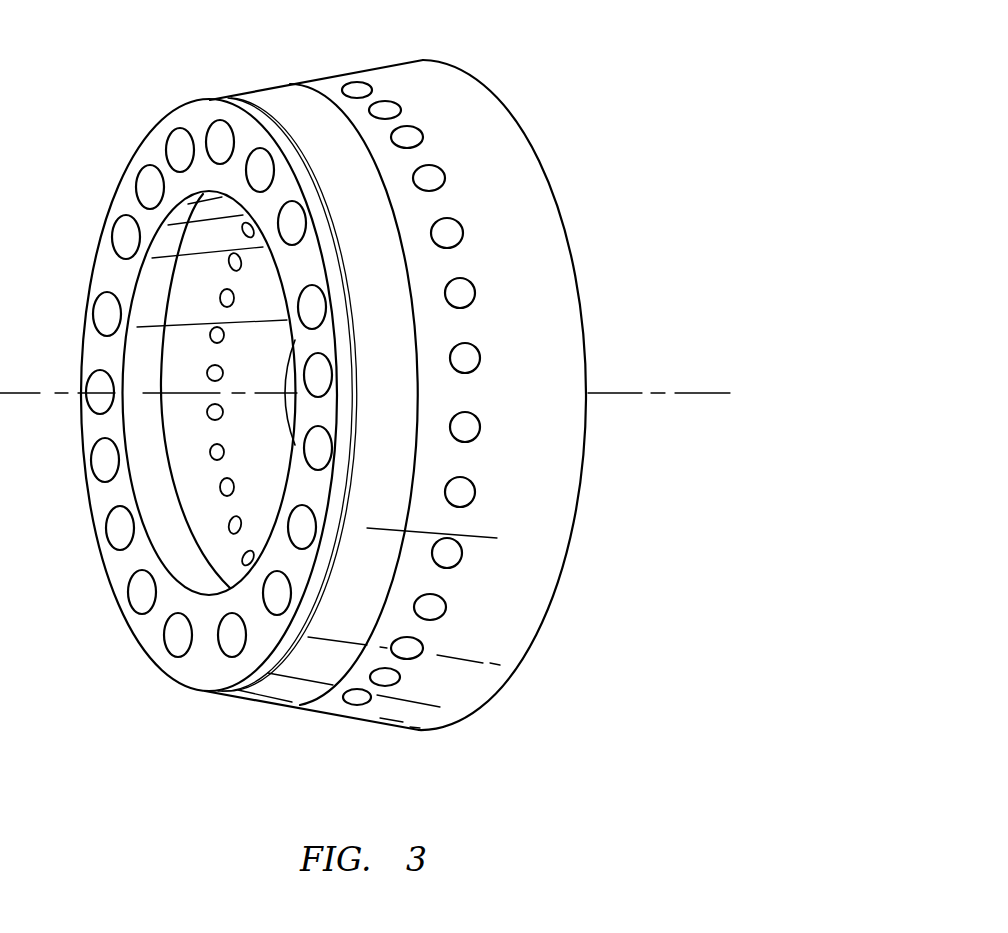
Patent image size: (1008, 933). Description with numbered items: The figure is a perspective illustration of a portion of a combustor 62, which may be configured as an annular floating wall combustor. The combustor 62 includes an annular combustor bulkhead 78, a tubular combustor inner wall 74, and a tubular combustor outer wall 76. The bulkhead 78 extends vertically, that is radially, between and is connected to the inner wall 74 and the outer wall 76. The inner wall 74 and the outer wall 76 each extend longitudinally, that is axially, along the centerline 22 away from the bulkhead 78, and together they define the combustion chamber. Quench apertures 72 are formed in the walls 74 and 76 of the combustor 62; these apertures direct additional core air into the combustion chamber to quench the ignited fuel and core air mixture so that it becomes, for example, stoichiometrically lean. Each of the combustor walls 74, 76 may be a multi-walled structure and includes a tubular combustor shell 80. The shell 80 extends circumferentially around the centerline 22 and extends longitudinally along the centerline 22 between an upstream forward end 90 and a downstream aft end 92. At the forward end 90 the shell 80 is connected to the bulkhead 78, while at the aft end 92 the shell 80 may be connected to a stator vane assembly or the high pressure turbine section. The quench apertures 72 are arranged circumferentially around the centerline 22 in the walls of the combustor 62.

The centerline 22 is at (695, 390).
The combustor 62 is at (604, 90).
The quench apertures 72 is at (219, 487).
The combustor inner wall 74 is at (158, 496).
The combustor outer wall 76 is at (528, 184).
The combustor bulkhead 78 is at (182, 669).
The combustor shell 80 is at (148, 312).
The forward end 90 is at (200, 690).
The aft end 92 is at (439, 731).